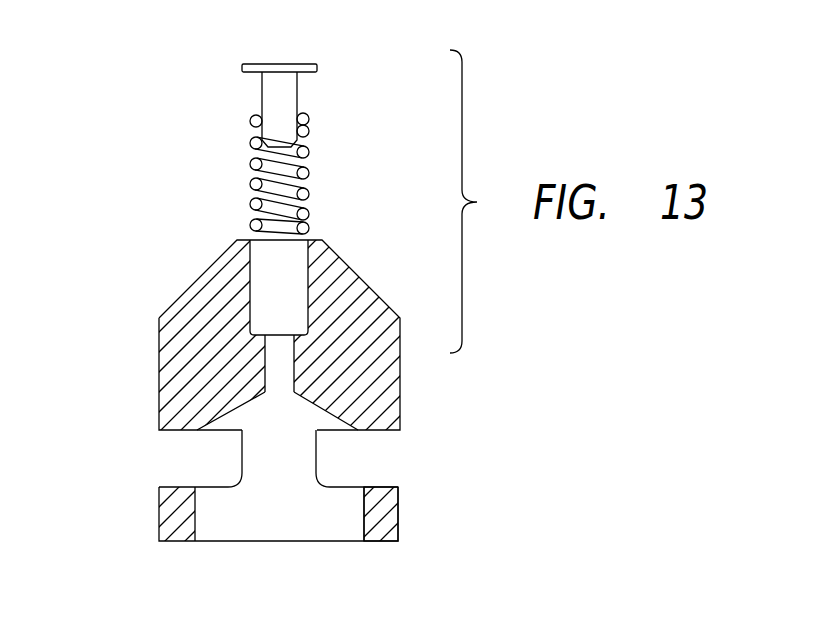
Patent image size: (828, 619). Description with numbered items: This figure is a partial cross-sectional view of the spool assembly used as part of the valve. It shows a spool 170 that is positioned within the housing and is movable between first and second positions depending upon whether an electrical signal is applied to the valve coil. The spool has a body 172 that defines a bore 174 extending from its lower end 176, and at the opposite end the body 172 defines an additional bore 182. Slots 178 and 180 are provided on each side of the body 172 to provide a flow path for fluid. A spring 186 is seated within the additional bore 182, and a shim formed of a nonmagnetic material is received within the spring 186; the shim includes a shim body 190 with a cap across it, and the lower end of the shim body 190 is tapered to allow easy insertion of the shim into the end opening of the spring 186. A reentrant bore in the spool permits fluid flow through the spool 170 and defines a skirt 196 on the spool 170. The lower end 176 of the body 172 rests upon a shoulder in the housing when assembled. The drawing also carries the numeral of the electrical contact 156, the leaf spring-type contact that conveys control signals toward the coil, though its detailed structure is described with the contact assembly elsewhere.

The spool 170 is at (118, 162).
The electrical contact 156 is at (285, 63).
The shim body 190 is at (268, 95).
The spring 186 is at (308, 153).
The body 172 is at (173, 337).
The additional bore 182 is at (258, 256).
The bore 174 is at (285, 377).
The slot 180 is at (180, 460).
The slot 178 is at (385, 455).
The lower end 176 is at (175, 541).
The skirt 196 is at (400, 510).